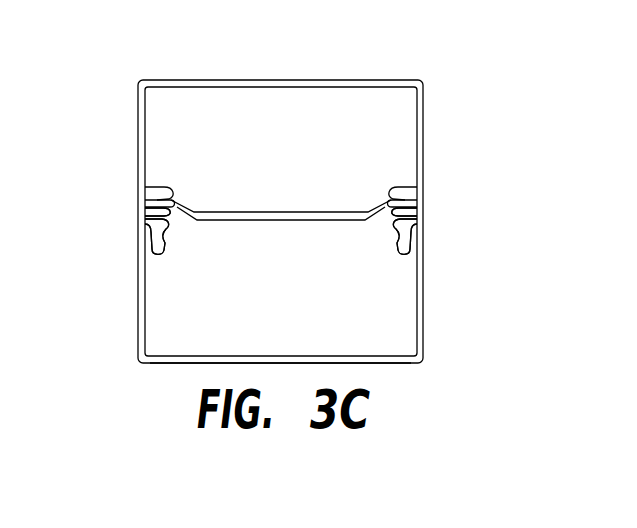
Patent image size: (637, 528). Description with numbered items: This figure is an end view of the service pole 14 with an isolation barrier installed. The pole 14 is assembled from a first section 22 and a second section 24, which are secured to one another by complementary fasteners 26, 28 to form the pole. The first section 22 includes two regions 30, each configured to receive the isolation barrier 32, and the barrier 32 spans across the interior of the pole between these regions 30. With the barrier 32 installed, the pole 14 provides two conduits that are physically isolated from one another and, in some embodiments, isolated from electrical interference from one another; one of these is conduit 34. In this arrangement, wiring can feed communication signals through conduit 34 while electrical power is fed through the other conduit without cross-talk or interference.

The service pole 14 is at (126, 55).
The first section 22 is at (369, 80).
The second section 24 is at (170, 363).
The complementary fastener 26 is at (150, 236).
The complementary fastener 28 is at (103, 235).
The region 30 is at (184, 187).
The isolation barrier 32 is at (262, 212).
The conduit 34 is at (213, 112).